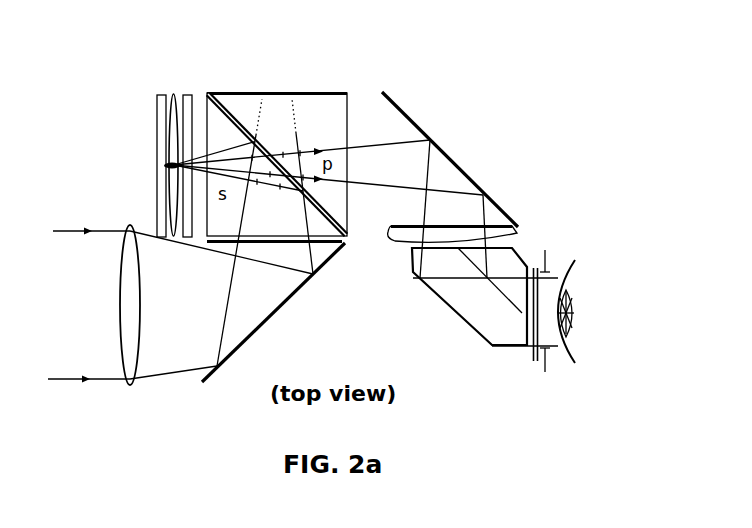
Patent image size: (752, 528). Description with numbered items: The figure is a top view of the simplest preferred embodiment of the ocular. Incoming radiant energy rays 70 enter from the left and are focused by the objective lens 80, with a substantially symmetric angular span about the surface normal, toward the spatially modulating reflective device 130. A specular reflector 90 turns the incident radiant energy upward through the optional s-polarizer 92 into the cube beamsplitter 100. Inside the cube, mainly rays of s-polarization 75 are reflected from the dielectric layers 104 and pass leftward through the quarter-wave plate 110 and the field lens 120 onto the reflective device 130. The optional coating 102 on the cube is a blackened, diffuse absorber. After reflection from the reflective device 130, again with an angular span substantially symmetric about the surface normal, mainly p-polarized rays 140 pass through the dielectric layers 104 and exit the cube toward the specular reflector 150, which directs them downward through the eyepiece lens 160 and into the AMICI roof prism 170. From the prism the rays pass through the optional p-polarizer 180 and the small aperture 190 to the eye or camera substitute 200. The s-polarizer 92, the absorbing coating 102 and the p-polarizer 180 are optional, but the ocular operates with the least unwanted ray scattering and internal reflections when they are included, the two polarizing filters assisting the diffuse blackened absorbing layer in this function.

The incoming radiant energy rays 70 is at (180, 305).
The rays of s-polarization 75 is at (243, 232).
The objective lens 80 is at (144, 305).
The specular reflector 90 is at (273, 312).
The s-polarizer 92 is at (318, 246).
The cube beamsplitter 100 is at (277, 139).
The coating 102 is at (318, 93).
The dielectric layers 104 is at (238, 120).
The quarter-wave plate 110 is at (188, 94).
The field lens 120 is at (173, 93).
The spatially modulating, reflective device 130 is at (151, 154).
The p-polarized rays 140 is at (330, 203).
The specular reflector 150 is at (450, 159).
The eyepiece lens 160 is at (502, 235).
The AMICI roof prism 170 is at (485, 297).
The p-polarizer 180 is at (533, 353).
The small aperture 190 is at (545, 362).
The eye or camera substitute 200 is at (593, 311).